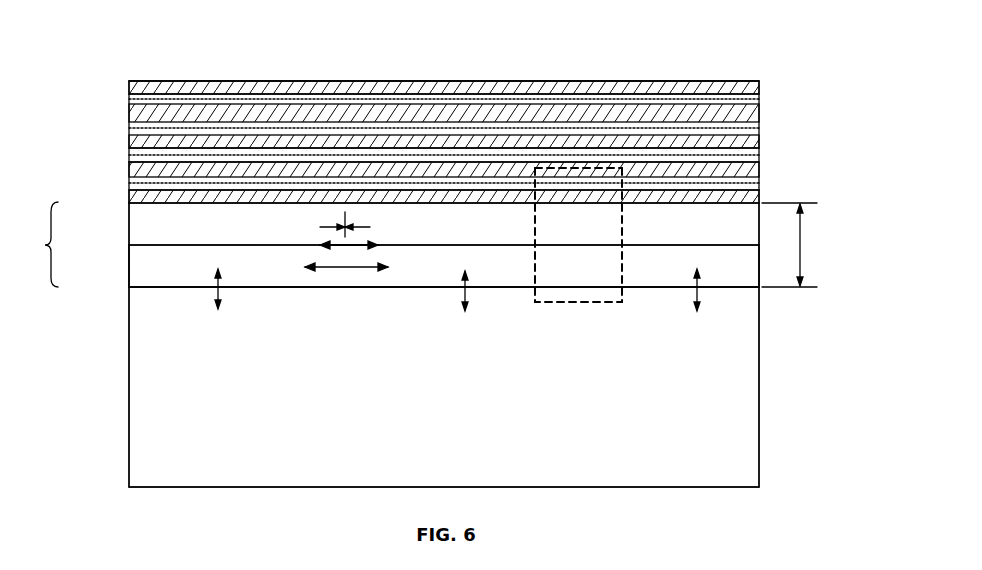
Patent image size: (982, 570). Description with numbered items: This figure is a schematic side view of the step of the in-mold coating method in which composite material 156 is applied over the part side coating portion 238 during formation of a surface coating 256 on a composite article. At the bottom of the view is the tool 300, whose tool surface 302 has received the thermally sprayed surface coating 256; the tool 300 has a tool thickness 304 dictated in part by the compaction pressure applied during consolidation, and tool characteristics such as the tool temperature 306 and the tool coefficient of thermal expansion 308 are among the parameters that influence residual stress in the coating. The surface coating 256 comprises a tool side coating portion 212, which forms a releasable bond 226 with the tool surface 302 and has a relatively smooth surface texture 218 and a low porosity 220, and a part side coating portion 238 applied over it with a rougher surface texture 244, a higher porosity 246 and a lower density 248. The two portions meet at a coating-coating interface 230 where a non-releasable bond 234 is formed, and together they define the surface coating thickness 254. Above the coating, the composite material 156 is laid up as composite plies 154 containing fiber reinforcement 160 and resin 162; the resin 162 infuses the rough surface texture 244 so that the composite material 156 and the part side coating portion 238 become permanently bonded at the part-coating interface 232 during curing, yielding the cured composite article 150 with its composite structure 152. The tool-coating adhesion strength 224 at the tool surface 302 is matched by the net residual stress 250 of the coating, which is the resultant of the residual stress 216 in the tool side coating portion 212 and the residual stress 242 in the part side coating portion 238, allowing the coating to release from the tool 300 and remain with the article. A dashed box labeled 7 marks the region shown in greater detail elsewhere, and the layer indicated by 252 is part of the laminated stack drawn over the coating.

The detail region of FIG. 7 is at (567, 168).
The cured composite article 150 is at (305, 81).
The composite structure 152 is at (390, 81).
The composite plies 154 is at (761, 87).
The composite material 156 is at (650, 81).
The fiber reinforcement 160 is at (130, 83).
The resin 162 is at (131, 110).
The tool side coating portion 212 is at (140, 268).
The residual stress 216 is at (350, 268).
The surface texture 218 is at (145, 287).
The porosity 220 is at (248, 290).
The tool-coating adhesion strength 224 is at (216, 292).
The releasable bond 226 is at (494, 288).
The coating-coating interface 230 is at (728, 247).
The part-coating interface 232 is at (167, 205).
The non-releasable bond 234 is at (761, 150).
The part side coating portion 238 is at (140, 223).
The residual stress 242 is at (320, 228).
The surface texture 244 is at (143, 213).
The porosity 246 is at (150, 205).
The density 248 is at (643, 233).
The net residual stress 250 is at (380, 247).
The adhesive layer 252 is at (740, 197).
The surface coating thickness 254 is at (803, 240).
The surface coating 256 is at (30, 244).
The tool 300 is at (757, 392).
The tool surface 302 is at (740, 289).
The tool thickness 304 is at (760, 333).
The tool temperature 306 is at (759, 456).
The tool coefficient of thermal expansion 308 is at (718, 489).